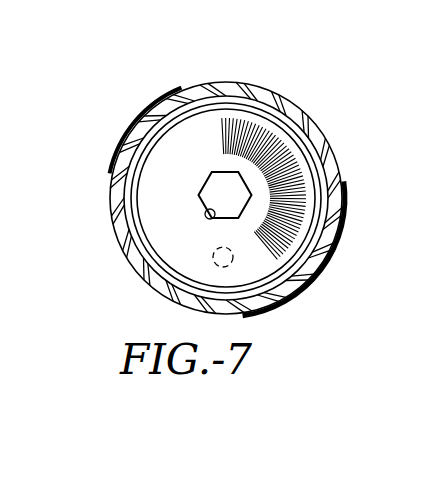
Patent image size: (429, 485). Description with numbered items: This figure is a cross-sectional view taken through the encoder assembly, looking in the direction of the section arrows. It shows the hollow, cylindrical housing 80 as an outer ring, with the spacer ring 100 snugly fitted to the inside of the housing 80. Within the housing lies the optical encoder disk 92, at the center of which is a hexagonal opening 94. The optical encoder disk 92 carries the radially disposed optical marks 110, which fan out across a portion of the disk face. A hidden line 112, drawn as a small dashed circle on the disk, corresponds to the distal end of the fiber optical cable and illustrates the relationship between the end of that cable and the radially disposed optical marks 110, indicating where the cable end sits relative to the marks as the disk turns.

The hollow, cylindrical housing 80 is at (304, 116).
The spacer ring 100 is at (263, 108).
The optical encoder disk 92 is at (182, 137).
The optical marks 110 is at (290, 216).
The hexagonal opening 94 is at (205, 216).
The hidden line 112 is at (233, 265).